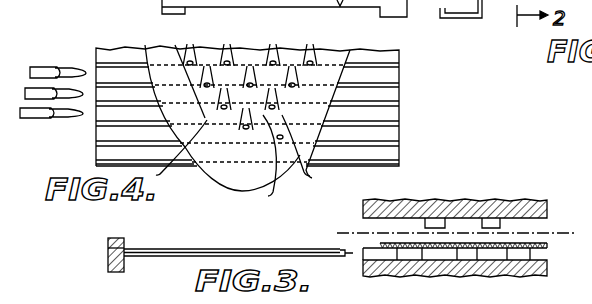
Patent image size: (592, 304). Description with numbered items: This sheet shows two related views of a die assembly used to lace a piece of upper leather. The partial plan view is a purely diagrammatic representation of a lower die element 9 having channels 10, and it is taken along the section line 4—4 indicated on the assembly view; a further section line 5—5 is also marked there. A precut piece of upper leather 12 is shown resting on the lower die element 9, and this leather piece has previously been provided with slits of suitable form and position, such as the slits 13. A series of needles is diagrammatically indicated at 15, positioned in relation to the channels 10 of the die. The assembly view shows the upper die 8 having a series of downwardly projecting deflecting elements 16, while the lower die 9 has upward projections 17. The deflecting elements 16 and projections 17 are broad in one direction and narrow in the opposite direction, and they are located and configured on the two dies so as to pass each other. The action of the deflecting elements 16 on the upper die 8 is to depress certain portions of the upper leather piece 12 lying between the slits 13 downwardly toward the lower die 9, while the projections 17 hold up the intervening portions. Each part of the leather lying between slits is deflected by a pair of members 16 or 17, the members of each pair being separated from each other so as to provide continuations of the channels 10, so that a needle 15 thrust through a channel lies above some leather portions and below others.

In FIG. 3, the section line 4— 4 is at (343, 232).
In FIG. 3, the section line 5— 5 is at (537, 181).
In FIG. 3, the upper die 8 is at (545, 199).
In FIG. 4, the lower die element 9 is at (400, 97).
In FIG. 3, the lower die element 9 is at (548, 263).
In FIG. 4, the channels 10 is at (117, 112).
In FIG. 4, the upper leather piece 12 is at (238, 188).
In FIG. 4, the slits 13 is at (247, 127).
In FIG. 4, the needles 15 is at (47, 66).
In FIG. 3, the needles 15 is at (153, 252).
In FIG. 3, the deflecting elements 16 is at (434, 218).
In FIG. 3, the upward projections 17 is at (407, 258).